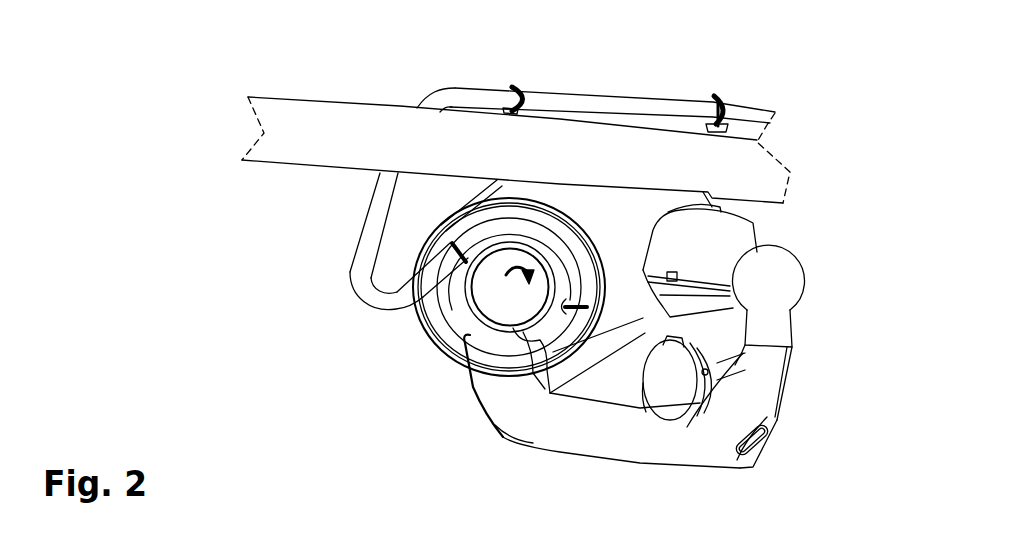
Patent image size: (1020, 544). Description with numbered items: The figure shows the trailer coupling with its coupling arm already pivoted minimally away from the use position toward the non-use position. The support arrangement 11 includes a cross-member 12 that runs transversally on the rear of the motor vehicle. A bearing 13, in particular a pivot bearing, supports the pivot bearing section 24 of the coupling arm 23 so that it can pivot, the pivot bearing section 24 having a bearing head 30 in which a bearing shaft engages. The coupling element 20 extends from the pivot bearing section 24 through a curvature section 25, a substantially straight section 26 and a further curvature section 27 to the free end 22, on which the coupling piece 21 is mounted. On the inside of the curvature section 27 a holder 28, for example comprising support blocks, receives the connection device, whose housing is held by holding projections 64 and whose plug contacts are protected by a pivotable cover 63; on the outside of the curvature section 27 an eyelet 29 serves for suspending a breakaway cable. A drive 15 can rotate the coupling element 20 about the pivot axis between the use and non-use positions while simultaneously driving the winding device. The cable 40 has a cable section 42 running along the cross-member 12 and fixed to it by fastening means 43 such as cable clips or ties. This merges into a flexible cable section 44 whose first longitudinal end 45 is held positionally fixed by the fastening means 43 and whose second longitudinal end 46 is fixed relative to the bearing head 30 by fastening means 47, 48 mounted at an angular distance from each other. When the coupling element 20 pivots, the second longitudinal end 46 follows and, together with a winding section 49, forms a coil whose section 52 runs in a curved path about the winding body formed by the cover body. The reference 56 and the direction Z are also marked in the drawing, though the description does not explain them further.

The support arrangement 11 is at (345, 96).
The cross-member 12 is at (290, 103).
The bearing 13 is at (500, 297).
The drive 15 is at (743, 247).
The coupling element 20 is at (782, 375).
The coupling piece 21 is at (793, 279).
The free end 22 is at (787, 330).
The coupling arm 23 is at (675, 468).
The pivot bearing section 24 is at (443, 347).
The curvature section 25 is at (483, 400).
The substantially straight section 26 is at (613, 453).
The further curvature section 27 is at (780, 417).
The holder 28 is at (723, 380).
The eyelet 29 is at (745, 460).
The bearing head 30 is at (443, 307).
The cable 40 is at (595, 66).
The cable section 42 is at (618, 108).
The fastening means 43 is at (513, 92).
The cable section 44 is at (357, 259).
The first longitudinal end 45 is at (439, 97).
The second longitudinal end 46 is at (440, 263).
The fastening means 47 is at (447, 240).
The fastening means 48 is at (588, 307).
The winding section 49 is at (360, 291).
The section 52 is at (557, 250).
The hose leg 56 is at (370, 227).
The cover 63 is at (663, 418).
The holding projections 64 is at (643, 408).
The direction Z is at (496, 445).